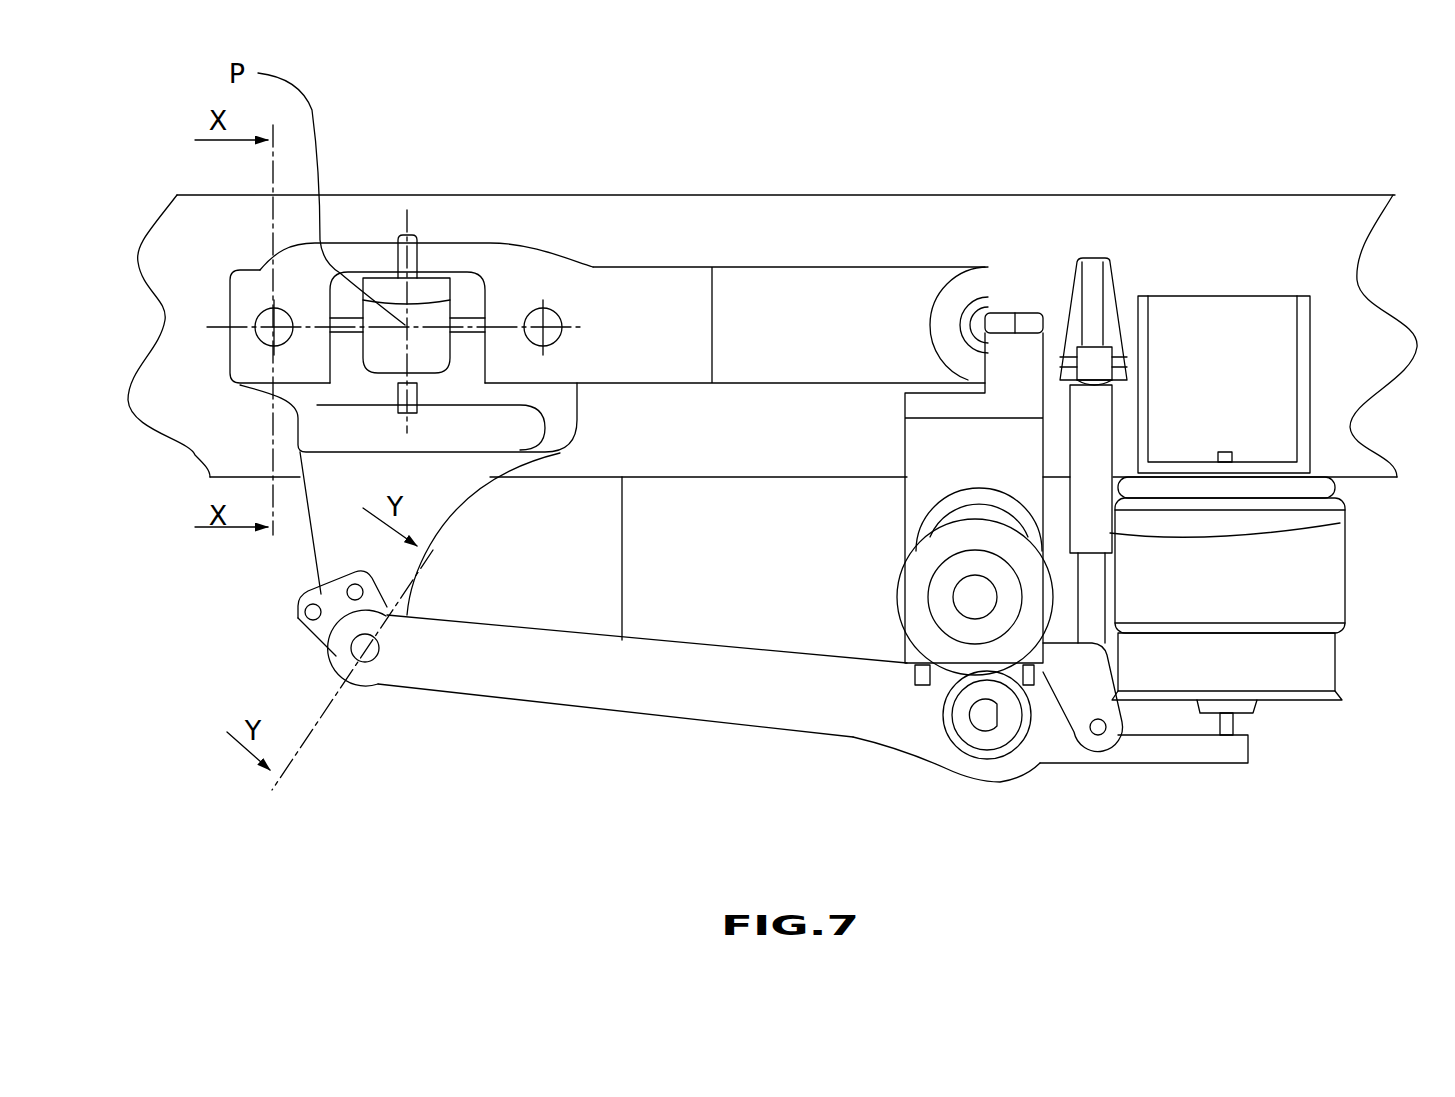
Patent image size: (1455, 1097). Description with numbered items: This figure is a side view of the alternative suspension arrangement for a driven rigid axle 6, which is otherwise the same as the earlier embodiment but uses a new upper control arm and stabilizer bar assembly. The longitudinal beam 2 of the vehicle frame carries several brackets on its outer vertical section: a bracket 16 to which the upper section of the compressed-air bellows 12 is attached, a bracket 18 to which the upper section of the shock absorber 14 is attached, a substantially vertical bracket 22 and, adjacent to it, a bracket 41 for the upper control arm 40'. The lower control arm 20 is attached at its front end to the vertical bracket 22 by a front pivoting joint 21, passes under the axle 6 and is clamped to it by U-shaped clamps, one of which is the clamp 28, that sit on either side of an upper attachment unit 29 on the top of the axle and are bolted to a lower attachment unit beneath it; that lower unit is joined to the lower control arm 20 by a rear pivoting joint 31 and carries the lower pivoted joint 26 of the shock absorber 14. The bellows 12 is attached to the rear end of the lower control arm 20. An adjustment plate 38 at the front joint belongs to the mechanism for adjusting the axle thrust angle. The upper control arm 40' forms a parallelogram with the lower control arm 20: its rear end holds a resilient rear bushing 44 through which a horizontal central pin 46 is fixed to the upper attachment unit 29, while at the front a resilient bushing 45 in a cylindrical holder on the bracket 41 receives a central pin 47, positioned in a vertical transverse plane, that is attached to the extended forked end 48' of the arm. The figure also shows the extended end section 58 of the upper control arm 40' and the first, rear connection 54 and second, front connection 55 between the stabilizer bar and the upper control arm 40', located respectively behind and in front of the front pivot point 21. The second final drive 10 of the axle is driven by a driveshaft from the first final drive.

The longitudinal beam 2 is at (1340, 208).
The second axle 6 is at (968, 608).
The second final drive 10 is at (765, 566).
The second bellows 12 is at (1340, 607).
The second shock absorber 14 is at (1345, 527).
The bracket 16 is at (1195, 307).
The bracket 18 is at (1093, 270).
The lower control arm 20 is at (623, 705).
The front pivoting joint 21 is at (380, 684).
The bracket 22 is at (318, 567).
The lower pivoted joint 26 is at (1122, 760).
The U-shaped clamp 28 is at (911, 684).
The upper attachment unit 29 is at (898, 512).
The rear pivoting joint 31 is at (993, 718).
The adjustment plate 38 is at (300, 627).
The upper control arm 40' is at (735, 234).
The bracket 41 is at (252, 382).
The rear bushing 44 is at (985, 305).
The front bushing 45 is at (453, 267).
The central pin 46 is at (1030, 313).
The central pin 47 is at (405, 300).
The extended forked end 48' is at (407, 234).
The first connection 54 is at (548, 300).
The second connection 55 is at (255, 348).
The extended end section 58 is at (243, 280).